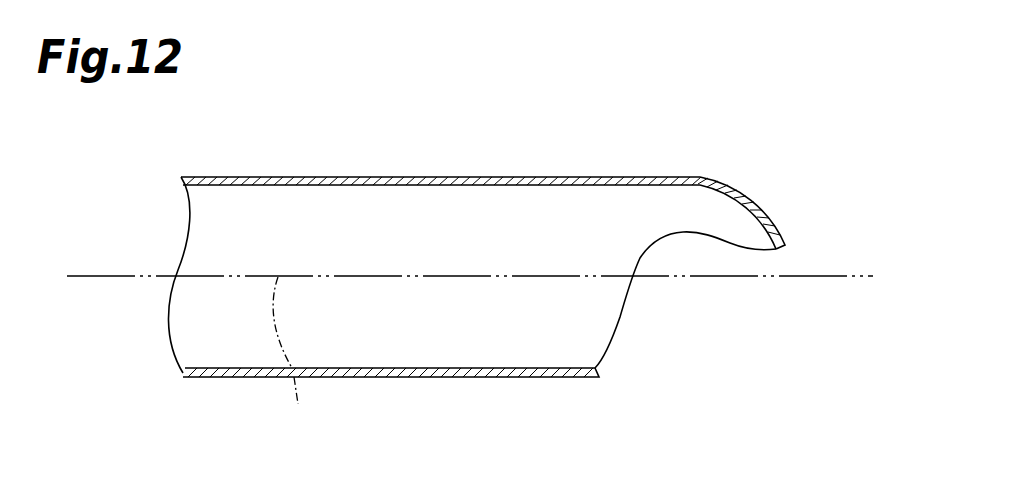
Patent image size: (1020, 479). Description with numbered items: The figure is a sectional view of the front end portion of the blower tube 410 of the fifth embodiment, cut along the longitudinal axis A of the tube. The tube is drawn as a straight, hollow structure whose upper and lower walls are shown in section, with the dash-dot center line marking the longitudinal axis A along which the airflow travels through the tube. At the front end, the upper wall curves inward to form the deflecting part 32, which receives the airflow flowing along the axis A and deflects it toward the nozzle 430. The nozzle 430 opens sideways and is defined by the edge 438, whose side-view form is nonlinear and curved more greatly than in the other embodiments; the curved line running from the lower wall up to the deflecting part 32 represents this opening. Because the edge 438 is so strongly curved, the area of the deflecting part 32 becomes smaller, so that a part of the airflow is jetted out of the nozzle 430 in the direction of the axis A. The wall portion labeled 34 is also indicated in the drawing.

The blower tube 410 is at (579, 128).
The tube wall (upper) 34 is at (405, 177).
The deflecting part 32 is at (716, 177).
The nozzle 430 is at (622, 306).
The edge 438 is at (597, 377).
The longitudinal axis A is at (290, 360).